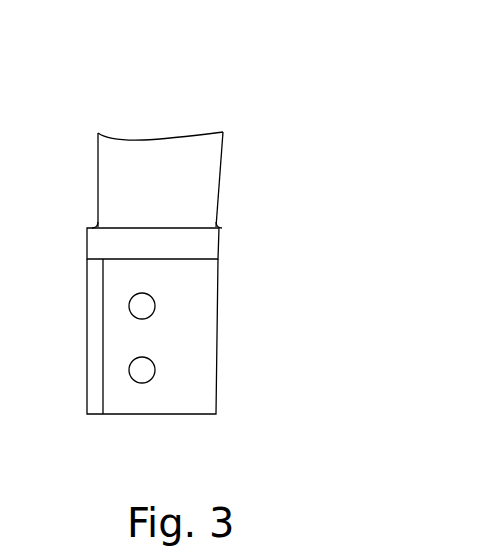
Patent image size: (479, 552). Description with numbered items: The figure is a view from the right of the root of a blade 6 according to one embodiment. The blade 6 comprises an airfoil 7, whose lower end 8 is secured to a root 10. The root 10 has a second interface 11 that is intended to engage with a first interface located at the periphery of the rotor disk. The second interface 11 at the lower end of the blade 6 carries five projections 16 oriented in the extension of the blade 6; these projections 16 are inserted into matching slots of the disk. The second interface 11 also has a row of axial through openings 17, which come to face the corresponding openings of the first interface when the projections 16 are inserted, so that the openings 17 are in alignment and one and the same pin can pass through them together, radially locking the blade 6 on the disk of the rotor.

The blade 6 is at (105, 131).
The airfoil 7 is at (193, 161).
The lower end 8 is at (222, 189).
The root 10 is at (195, 245).
The second interface 11 is at (222, 337).
The projections 16 is at (193, 388).
The axial through openings 17 is at (142, 306).